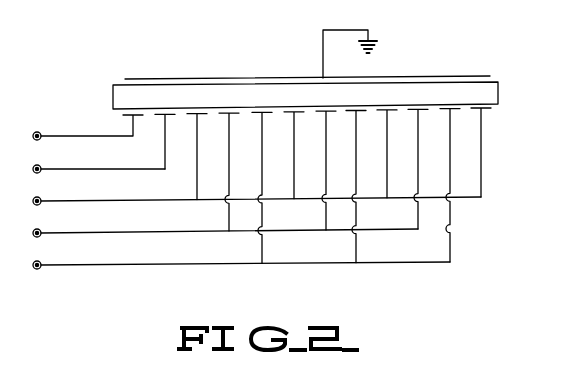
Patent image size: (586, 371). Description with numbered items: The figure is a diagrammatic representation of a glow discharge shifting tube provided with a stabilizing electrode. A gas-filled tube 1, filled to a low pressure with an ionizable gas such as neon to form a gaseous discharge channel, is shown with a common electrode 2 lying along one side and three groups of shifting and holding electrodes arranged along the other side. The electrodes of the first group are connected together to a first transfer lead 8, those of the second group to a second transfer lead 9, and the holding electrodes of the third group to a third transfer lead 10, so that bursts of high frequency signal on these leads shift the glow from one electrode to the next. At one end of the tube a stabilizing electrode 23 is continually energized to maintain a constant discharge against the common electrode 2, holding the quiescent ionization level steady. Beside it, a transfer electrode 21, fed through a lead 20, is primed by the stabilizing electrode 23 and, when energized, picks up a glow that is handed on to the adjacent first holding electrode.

The gas-filled tube 1 is at (498, 91).
The common electrode 2 is at (470, 76).
The stabilizing electrode 23 is at (131, 116).
The transfer electrode 21 is at (170, 115).
The lead 20 is at (70, 170).
The third transfer lead 10 is at (75, 202).
The first transfer lead 8 is at (75, 234).
The second transfer lead 9 is at (70, 266).